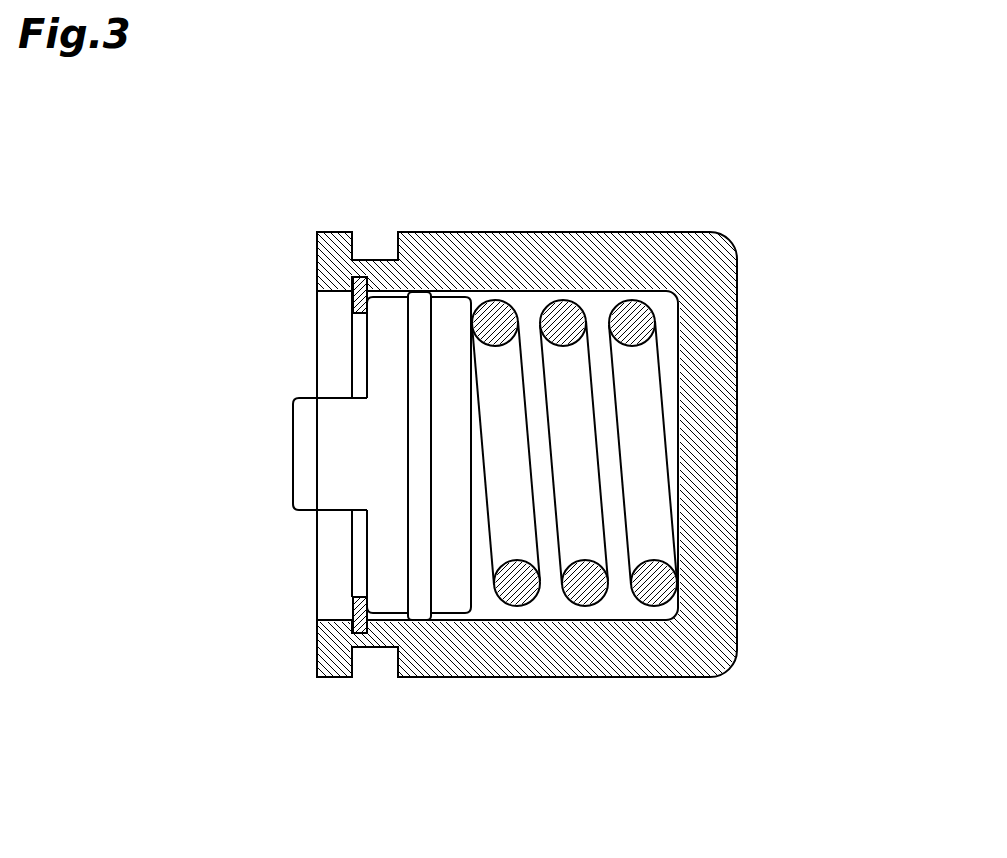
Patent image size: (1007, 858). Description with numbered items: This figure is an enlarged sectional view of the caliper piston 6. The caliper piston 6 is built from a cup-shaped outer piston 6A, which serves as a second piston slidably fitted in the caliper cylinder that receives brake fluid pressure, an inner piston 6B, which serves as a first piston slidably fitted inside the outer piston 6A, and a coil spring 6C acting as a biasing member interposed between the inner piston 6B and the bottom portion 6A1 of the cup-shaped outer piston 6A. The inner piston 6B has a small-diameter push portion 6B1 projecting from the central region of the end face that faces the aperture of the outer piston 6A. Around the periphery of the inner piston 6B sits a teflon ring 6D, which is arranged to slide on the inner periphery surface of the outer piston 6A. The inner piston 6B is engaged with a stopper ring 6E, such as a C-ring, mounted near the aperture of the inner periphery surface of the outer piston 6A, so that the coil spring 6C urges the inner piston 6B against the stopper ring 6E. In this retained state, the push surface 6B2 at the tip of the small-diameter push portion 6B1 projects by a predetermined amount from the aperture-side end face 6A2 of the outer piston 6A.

The caliper piston 6 is at (689, 210).
The outer piston 6A is at (543, 681).
The bottom portion 6A1 is at (715, 463).
The aperture-side end face 6A2 is at (317, 578).
The inner piston 6B is at (363, 530).
The small-diameter push portion 6B1 is at (323, 462).
The push surface 6B2 is at (293, 442).
The coil spring 6C is at (662, 382).
The teflon ring 6D is at (417, 340).
The stopper ring 6E is at (362, 298).